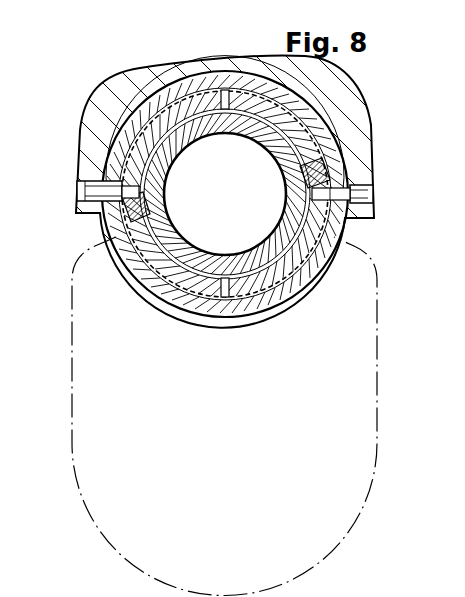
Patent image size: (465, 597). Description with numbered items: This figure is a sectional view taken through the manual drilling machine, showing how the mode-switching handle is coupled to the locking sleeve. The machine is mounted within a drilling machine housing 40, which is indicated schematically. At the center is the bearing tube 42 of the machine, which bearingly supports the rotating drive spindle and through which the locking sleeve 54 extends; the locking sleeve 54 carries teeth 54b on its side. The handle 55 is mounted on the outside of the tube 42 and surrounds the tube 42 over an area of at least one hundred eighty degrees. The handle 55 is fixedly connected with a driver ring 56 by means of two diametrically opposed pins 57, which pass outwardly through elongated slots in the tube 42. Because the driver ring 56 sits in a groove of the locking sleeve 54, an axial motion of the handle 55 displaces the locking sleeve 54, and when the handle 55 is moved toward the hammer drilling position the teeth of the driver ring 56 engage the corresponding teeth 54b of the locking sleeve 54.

The drilling machine housing 40 is at (82, 457).
The bearing tube 42 is at (183, 307).
The locking sleeve 54 is at (260, 253).
The teeth of the locking sleeve 54b is at (292, 250).
The handle 55 is at (121, 80).
The driver ring 56 is at (168, 185).
The pins 57 is at (80, 188).